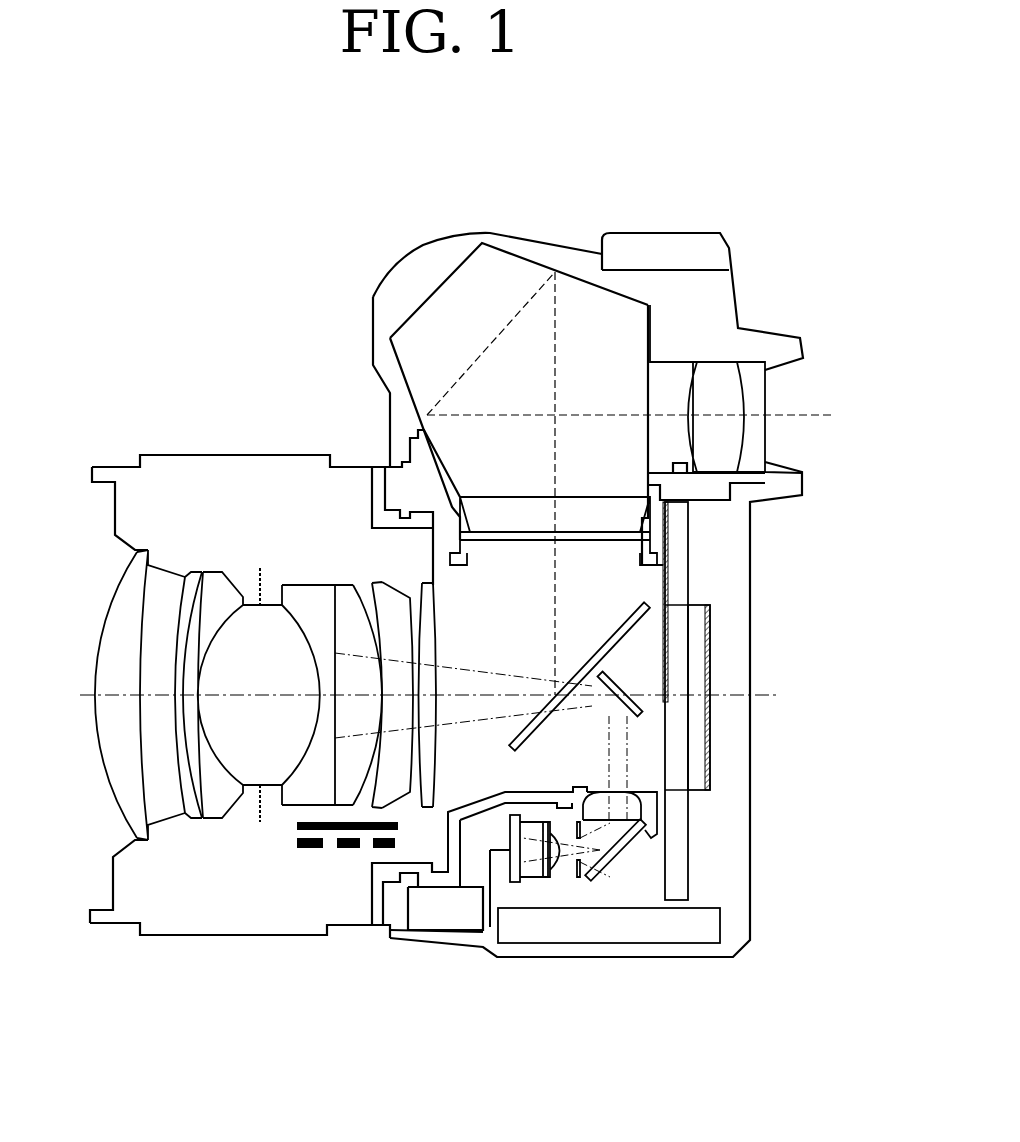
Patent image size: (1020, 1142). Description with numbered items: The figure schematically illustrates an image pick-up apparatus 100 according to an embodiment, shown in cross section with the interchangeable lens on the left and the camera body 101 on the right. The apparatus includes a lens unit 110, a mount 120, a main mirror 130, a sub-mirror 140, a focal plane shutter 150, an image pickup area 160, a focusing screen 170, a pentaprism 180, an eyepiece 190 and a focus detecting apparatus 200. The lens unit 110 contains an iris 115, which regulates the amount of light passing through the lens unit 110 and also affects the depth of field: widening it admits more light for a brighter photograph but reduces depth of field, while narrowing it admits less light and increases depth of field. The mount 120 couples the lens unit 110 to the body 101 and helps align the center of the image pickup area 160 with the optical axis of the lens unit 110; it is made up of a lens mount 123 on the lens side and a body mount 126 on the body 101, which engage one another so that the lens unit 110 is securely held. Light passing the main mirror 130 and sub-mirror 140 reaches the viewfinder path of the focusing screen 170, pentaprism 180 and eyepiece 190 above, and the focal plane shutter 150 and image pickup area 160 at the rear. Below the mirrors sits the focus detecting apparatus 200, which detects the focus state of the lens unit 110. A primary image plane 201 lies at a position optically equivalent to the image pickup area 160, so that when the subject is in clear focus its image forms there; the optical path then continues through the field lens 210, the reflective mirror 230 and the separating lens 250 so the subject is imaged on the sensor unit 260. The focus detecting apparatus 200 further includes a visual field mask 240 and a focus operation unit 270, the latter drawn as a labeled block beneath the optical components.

The image pick-up apparatus 100 is at (210, 200).
The body 101 is at (755, 908).
The lens unit 110 is at (154, 441).
The iris 115 is at (265, 568).
The mount 120 is at (349, 985).
The lens mount 123 is at (377, 907).
The body mount 126 is at (397, 910).
The main mirror 130 is at (622, 625).
The sub-mirror 140 is at (606, 686).
The focal plane shutter 150 is at (690, 864).
The image pickup area 160 is at (712, 713).
The focusing screen 170 is at (610, 542).
The pentaprism 180 is at (520, 252).
The eyepiece 190 is at (794, 390).
The focus detecting apparatus 200 is at (628, 906).
The primary image plane 201 is at (645, 790).
The field lens 210 is at (660, 895).
The reflective mirror 230 is at (626, 822).
The visual field mask 240 is at (590, 880).
The separating lens 250 is at (560, 878).
The sensor unit 260 is at (517, 880).
The focus operation unit 270 is at (718, 1023).